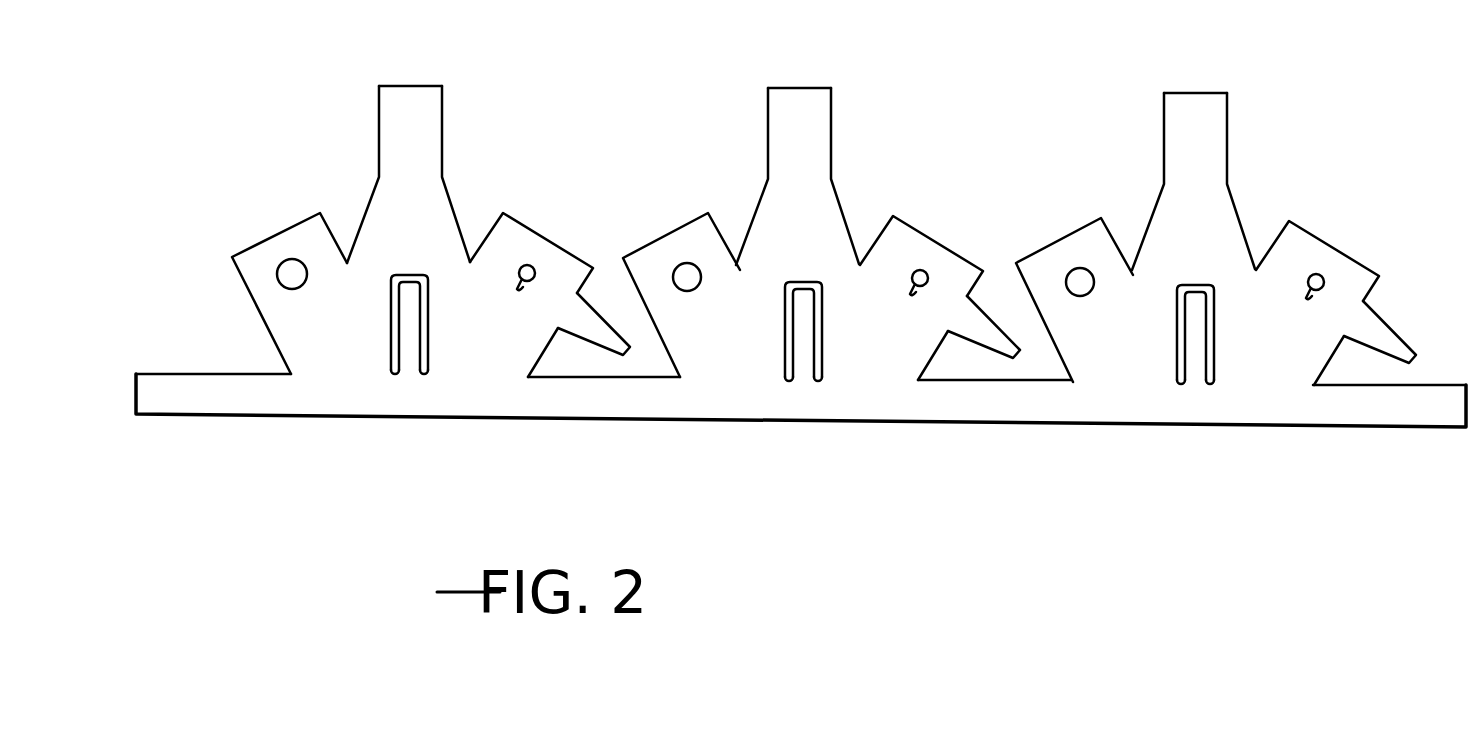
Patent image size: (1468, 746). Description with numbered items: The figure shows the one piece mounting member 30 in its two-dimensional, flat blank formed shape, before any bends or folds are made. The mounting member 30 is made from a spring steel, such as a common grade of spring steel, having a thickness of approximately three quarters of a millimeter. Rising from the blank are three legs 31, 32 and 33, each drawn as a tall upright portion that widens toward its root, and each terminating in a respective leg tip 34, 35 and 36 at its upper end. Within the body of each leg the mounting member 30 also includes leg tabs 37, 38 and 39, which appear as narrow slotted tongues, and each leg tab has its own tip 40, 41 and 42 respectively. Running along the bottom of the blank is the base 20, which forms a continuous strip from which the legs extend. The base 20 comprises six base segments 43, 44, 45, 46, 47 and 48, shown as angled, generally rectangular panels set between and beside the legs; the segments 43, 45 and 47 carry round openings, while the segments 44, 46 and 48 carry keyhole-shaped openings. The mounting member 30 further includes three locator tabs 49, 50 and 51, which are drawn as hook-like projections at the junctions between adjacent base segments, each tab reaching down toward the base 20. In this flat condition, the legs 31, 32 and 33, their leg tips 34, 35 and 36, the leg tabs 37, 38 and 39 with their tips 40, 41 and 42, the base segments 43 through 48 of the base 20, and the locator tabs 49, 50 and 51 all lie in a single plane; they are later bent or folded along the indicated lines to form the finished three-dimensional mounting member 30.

The base 20 is at (248, 315).
The mounting member 30 is at (254, 169).
The leg 31 is at (379, 137).
The leg 32 is at (767, 125).
The leg 33 is at (1163, 118).
The leg tip 34 is at (406, 86).
The leg tip 35 is at (799, 88).
The leg tip 36 is at (1204, 93).
The leg tab 37 is at (410, 360).
The leg tab 38 is at (805, 365).
The leg tab 39 is at (1198, 373).
The tip 40 is at (405, 282).
The tip 41 is at (803, 288).
The tip 42 is at (1193, 295).
The base segment 43 is at (263, 242).
The base segment 44 is at (537, 233).
The base segment 45 is at (670, 230).
The base segment 46 is at (930, 232).
The base segment 47 is at (1063, 240).
The base segment 48 is at (1325, 235).
The locator tab 49 is at (613, 313).
The locator tab 50 is at (1003, 313).
The locator tab 51 is at (1401, 325).